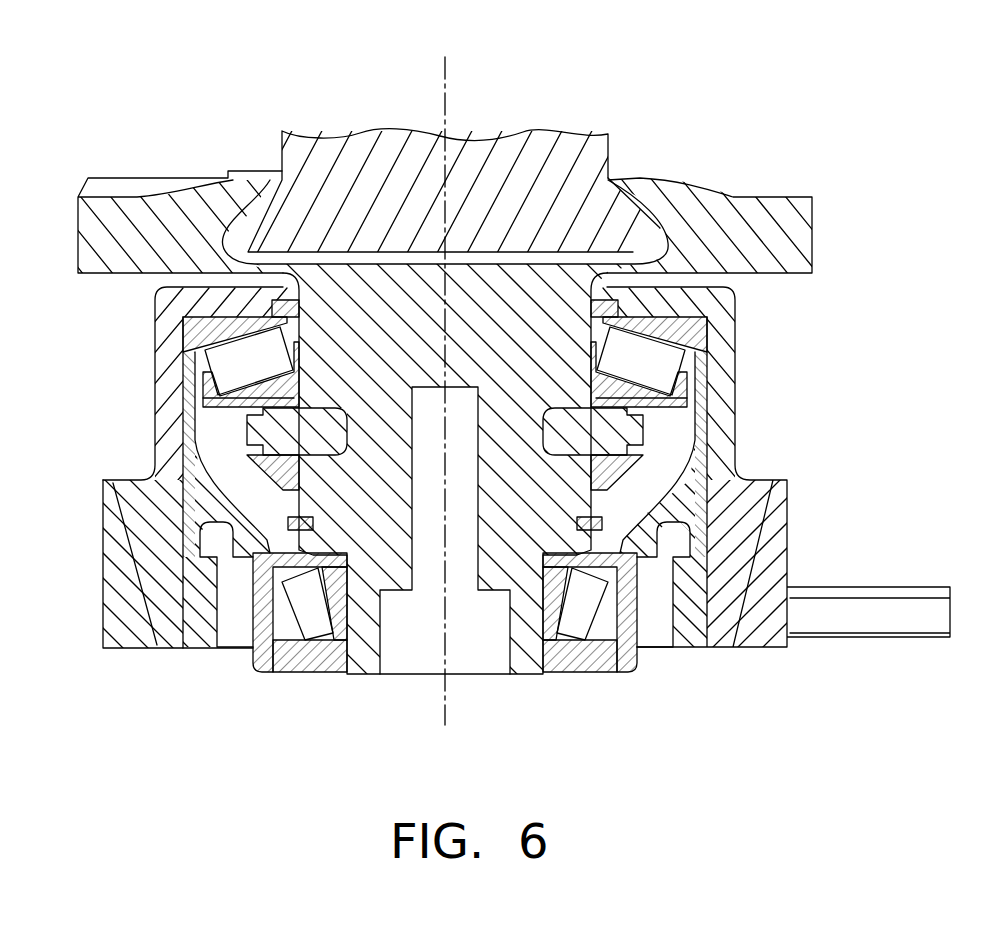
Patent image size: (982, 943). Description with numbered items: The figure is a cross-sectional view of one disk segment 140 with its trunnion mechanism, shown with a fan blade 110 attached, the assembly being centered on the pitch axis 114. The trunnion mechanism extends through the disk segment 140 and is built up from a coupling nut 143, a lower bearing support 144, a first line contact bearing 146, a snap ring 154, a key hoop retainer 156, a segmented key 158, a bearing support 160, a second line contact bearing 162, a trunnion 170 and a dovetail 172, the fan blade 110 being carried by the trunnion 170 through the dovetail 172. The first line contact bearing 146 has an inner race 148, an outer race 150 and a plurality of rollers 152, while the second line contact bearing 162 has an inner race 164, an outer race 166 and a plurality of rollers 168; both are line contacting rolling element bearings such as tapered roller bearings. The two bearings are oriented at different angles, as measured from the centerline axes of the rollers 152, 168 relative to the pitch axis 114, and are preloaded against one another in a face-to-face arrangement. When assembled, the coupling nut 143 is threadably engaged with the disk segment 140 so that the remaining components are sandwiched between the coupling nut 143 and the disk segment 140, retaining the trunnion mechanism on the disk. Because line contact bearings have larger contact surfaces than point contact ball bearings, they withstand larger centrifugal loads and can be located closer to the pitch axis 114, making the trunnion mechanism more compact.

The fan blade 110 is at (540, 137).
The pitch axis 114 is at (445, 83).
The disk segment 140 is at (797, 477).
The coupling nut 143 is at (197, 630).
The lower bearing support 144 is at (630, 662).
The first line contact bearing 146 is at (338, 678).
The inner race 148 is at (337, 597).
The outer race 150 is at (290, 640).
The rollers 152 is at (262, 667).
The snap ring 154 is at (605, 521).
The key hoop retainer 156 is at (630, 452).
The segmented key 158 is at (600, 428).
The bearing support 160 is at (196, 440).
The second line contact bearing 162 is at (684, 324).
The inner race 164 is at (210, 392).
The outer race 166 is at (200, 334).
The rollers 168 is at (240, 350).
The trunnion 170 is at (720, 187).
The dovetail 172 is at (577, 180).